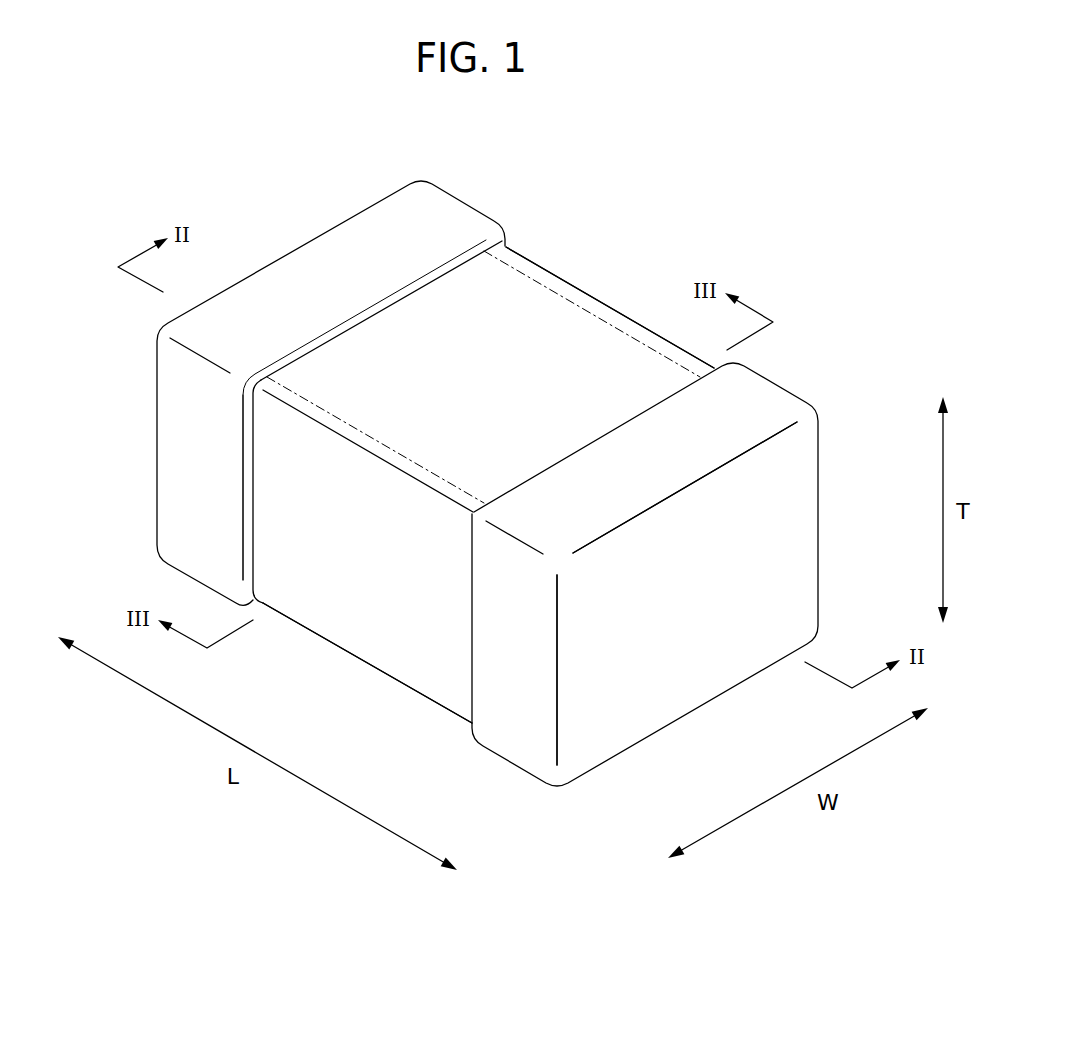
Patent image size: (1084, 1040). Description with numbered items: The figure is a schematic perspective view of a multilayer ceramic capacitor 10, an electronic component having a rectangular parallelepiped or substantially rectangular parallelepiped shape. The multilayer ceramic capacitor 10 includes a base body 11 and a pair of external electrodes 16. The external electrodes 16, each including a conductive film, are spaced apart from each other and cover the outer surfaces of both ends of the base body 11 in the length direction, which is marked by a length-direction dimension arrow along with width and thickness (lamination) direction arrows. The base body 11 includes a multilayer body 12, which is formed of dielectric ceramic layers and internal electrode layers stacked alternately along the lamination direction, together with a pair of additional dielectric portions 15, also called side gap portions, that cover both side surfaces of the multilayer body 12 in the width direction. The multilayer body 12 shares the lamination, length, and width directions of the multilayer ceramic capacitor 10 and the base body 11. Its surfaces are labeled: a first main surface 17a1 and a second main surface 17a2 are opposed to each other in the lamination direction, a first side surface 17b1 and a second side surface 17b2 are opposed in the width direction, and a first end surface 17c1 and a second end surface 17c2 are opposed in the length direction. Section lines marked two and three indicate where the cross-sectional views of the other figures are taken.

The multilayer ceramic capacitor 10 is at (850, 258).
The base body 11 is at (398, 335).
The multilayer body 12 is at (540, 275).
The additional dielectric portion 15 is at (603, 303).
The external electrode 16 is at (423, 213).
The first main surface 17a1 is at (523, 377).
The second main surface 17a2 is at (450, 682).
The first side surface 17b1 is at (387, 588).
The second side surface 17b2 is at (615, 350).
The first end surface 17c1 is at (682, 662).
The second end surface 17c2 is at (197, 453).